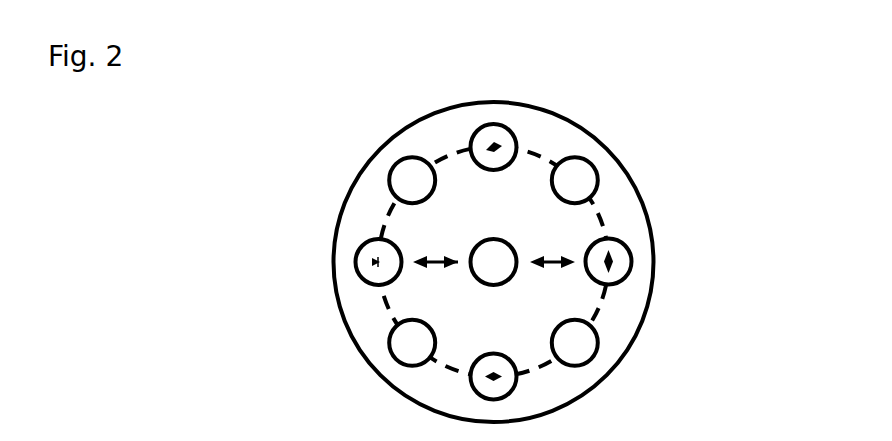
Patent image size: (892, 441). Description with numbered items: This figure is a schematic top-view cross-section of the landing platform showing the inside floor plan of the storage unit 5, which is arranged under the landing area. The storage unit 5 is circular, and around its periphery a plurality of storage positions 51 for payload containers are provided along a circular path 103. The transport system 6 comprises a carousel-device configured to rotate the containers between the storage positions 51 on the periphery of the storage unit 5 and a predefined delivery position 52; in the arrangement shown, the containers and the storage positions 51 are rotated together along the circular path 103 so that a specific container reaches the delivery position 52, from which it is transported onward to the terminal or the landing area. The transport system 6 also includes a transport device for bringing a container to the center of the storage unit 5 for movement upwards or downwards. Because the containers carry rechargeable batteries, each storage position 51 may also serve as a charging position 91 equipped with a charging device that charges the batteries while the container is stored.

The storage unit 5 is at (348, 218).
The transport system 6 is at (579, 261).
The circular path 103 is at (603, 216).
The storage position 51 is at (493, 147).
The charging position 91 is at (573, 176).
The delivery position 52 is at (378, 262).